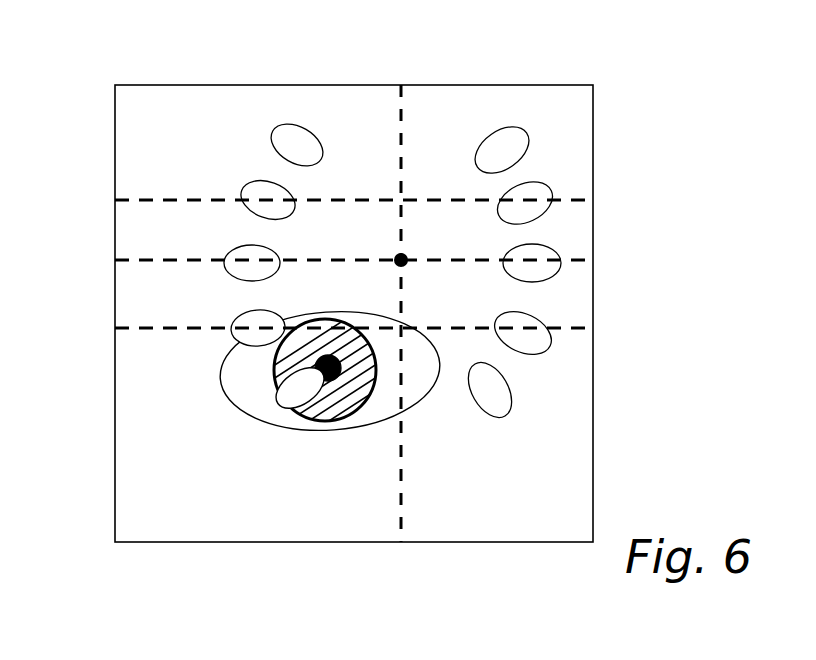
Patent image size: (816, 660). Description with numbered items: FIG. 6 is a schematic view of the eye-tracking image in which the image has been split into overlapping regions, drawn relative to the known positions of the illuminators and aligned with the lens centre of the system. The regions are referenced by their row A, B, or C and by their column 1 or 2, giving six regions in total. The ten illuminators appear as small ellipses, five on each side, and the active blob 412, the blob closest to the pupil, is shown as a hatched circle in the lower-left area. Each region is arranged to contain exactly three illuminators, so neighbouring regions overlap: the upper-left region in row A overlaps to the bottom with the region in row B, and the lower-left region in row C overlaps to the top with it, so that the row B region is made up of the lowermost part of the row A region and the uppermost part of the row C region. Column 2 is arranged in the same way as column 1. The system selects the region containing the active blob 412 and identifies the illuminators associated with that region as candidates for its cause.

The active blob 412 is at (272, 414).
The column 1 is at (401, 60).
The column 2 is at (593, 60).
The row A is at (102, 542).
The row B is at (72, 200).
The row C is at (79, 485).